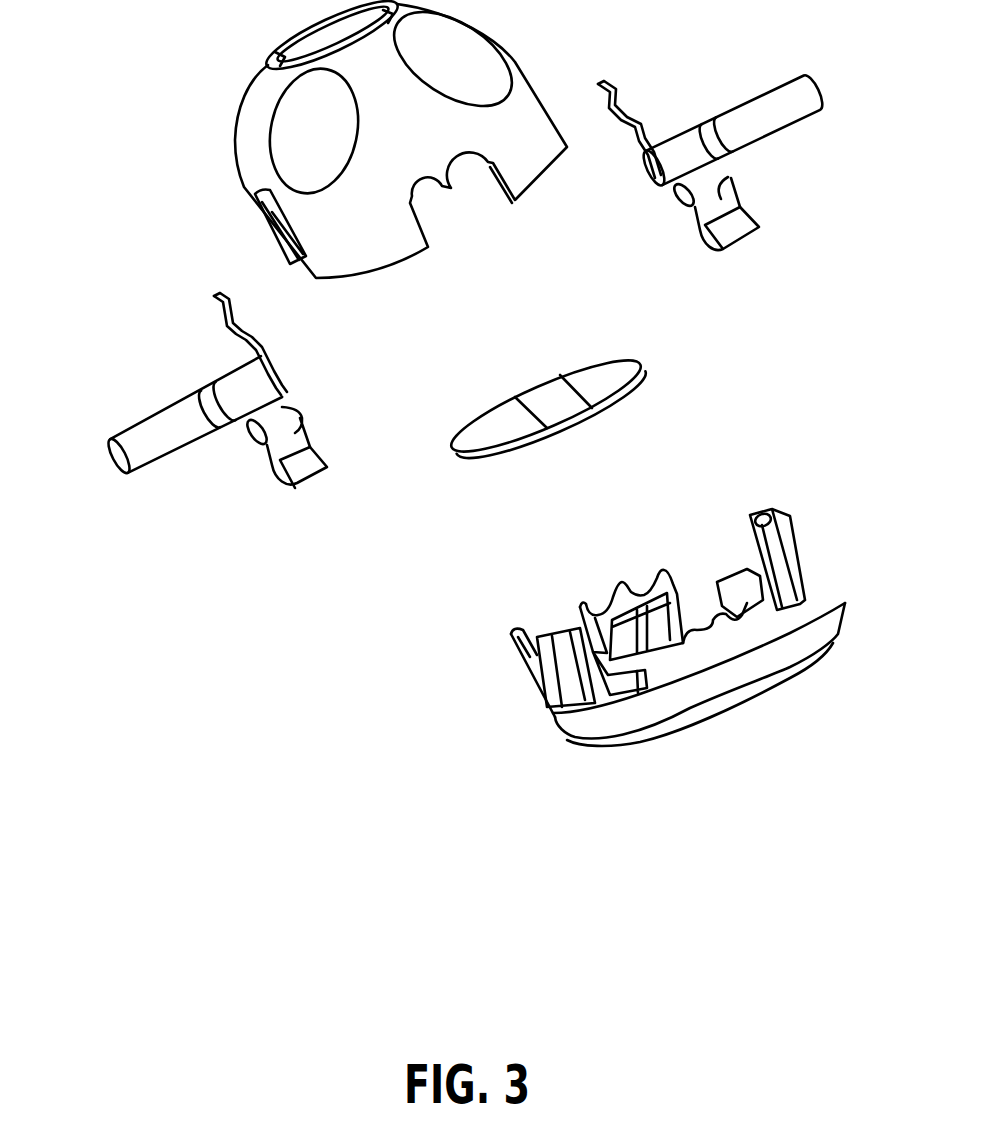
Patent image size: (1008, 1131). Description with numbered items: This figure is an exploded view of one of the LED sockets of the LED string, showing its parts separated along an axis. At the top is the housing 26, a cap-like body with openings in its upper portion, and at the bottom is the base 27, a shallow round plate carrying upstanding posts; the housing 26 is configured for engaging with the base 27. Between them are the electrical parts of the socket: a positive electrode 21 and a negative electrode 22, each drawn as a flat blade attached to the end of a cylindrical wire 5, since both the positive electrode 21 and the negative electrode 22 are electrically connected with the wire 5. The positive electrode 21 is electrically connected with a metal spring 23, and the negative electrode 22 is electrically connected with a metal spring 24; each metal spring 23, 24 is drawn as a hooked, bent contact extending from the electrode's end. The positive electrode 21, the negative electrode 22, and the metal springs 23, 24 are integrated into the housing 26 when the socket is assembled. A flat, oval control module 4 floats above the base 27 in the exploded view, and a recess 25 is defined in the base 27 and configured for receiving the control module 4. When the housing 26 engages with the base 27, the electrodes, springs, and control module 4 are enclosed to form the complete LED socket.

The control module 4 is at (558, 430).
The wire 5 is at (798, 82).
The positive electrode 21 is at (260, 380).
The negative electrode 22 is at (672, 163).
The metal spring 23 is at (298, 427).
The metal spring 24 is at (718, 198).
The recess 25 is at (690, 605).
The housing 26 is at (258, 137).
The base 27 is at (583, 728).